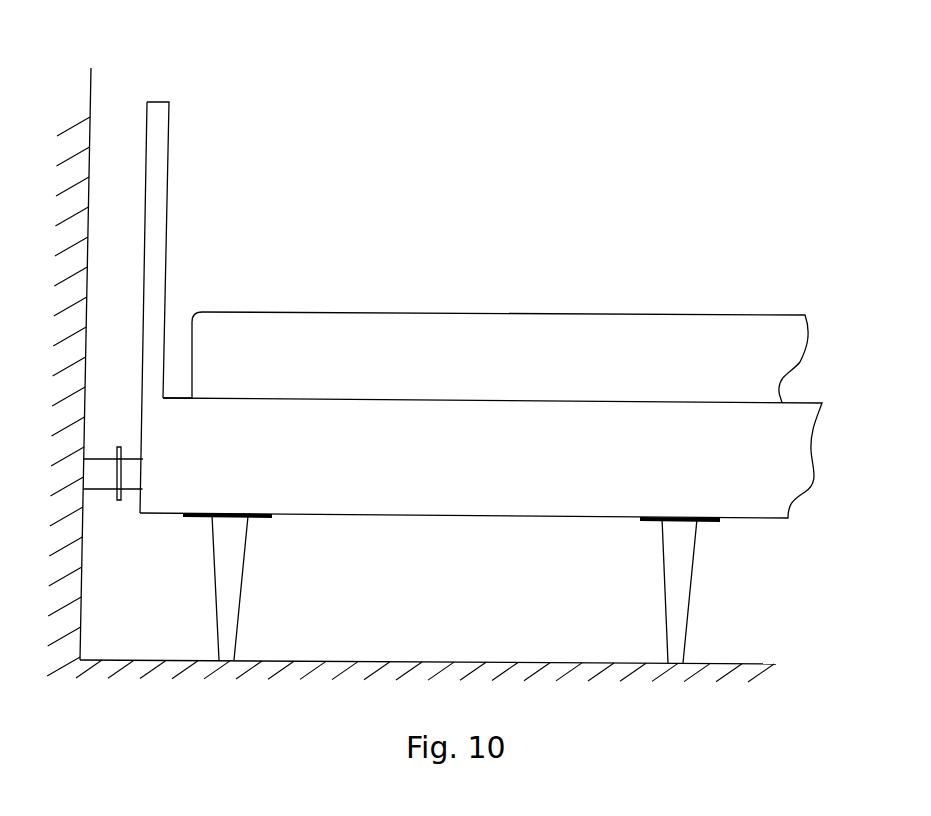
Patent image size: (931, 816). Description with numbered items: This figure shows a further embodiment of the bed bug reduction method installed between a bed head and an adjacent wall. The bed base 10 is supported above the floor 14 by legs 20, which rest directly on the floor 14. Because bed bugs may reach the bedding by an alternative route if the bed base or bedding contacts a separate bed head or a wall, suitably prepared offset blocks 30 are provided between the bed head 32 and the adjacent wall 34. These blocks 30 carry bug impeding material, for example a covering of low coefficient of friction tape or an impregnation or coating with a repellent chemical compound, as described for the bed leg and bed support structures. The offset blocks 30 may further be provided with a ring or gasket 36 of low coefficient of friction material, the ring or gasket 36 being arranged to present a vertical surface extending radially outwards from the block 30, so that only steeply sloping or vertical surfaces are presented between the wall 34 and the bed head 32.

The bed base 10 is at (659, 191).
The floor 14 is at (735, 662).
The leg 20 is at (260, 517).
The offset block 30 is at (117, 519).
The bed head 32 is at (166, 185).
The wall 34 is at (90, 118).
The ring or gasket 36 is at (120, 443).